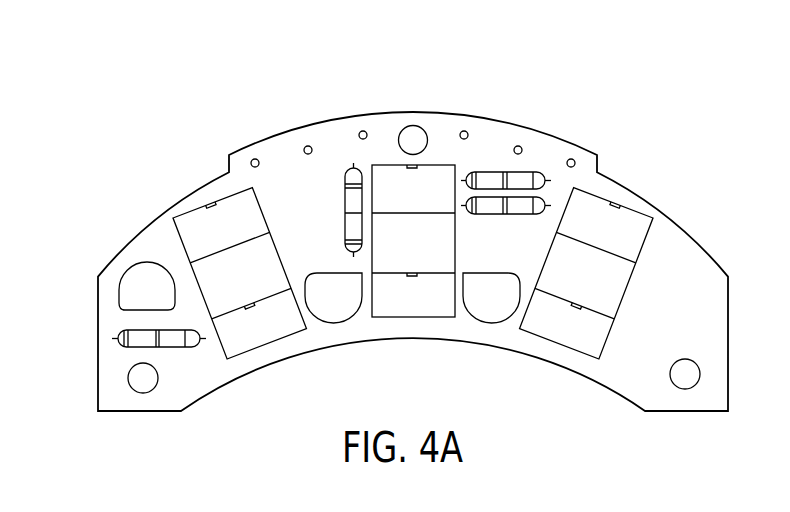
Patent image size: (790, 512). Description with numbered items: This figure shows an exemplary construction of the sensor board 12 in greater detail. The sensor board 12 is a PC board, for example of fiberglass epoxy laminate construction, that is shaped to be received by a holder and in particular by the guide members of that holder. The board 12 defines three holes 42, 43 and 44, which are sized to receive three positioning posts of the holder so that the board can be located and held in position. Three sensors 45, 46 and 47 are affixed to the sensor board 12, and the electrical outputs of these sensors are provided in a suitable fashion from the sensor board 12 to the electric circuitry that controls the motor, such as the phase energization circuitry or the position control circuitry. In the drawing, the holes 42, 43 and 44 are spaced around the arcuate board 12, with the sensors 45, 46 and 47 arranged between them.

The sensor board 12 is at (110, 325).
The hole 42 is at (145, 385).
The hole 43 is at (411, 142).
The hole 44 is at (692, 373).
The sensor 45 is at (190, 210).
The sensor 46 is at (393, 165).
The sensor 47 is at (597, 200).